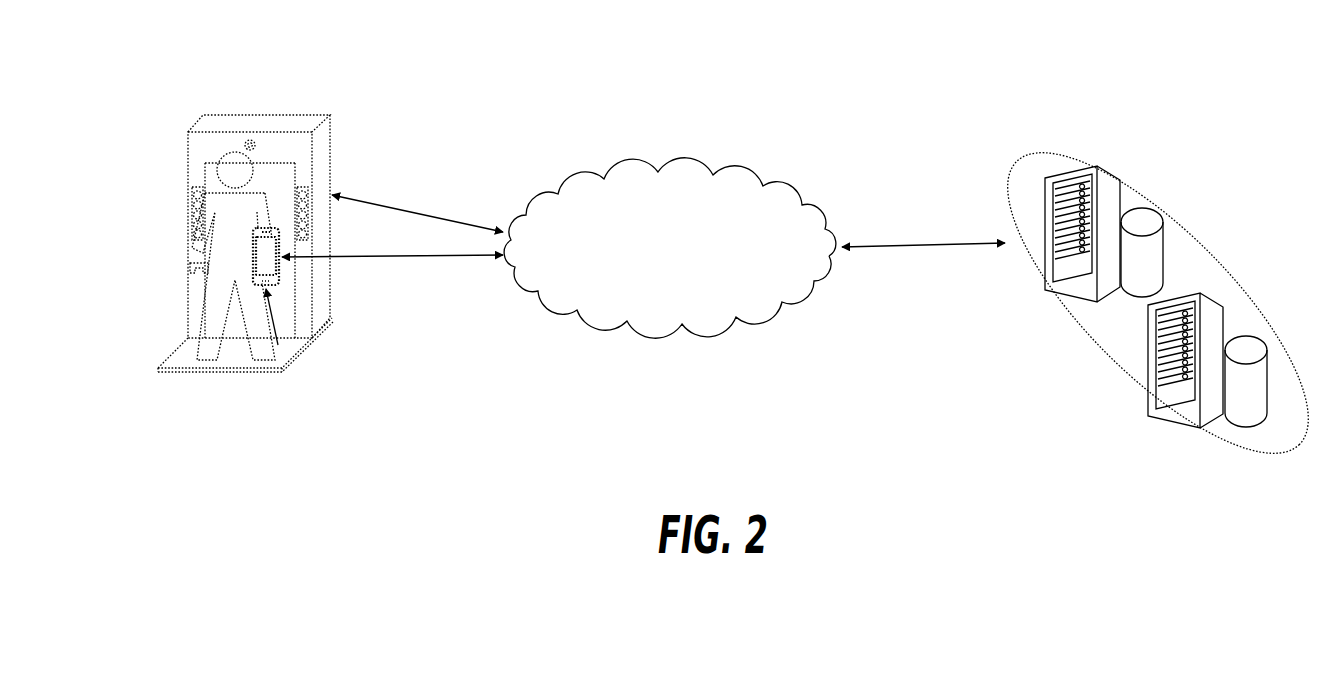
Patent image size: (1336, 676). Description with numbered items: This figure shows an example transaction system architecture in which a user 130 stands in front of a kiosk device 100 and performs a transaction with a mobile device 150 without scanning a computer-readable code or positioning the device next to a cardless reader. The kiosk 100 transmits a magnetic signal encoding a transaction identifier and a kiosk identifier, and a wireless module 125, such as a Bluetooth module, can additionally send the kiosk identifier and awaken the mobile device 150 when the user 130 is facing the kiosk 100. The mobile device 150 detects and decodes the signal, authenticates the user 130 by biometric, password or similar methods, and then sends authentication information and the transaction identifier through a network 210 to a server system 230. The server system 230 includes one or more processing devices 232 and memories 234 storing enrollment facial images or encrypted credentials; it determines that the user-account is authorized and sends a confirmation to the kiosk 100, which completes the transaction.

The kiosk device 100 is at (267, 115).
The wireless module 125 is at (180, 348).
The user 130 is at (207, 215).
The mobile device 150 is at (268, 228).
The network 210 is at (670, 170).
The server system 230 is at (1151, 297).
The processing devices 232 is at (1078, 168).
The memories 234 is at (1143, 208).